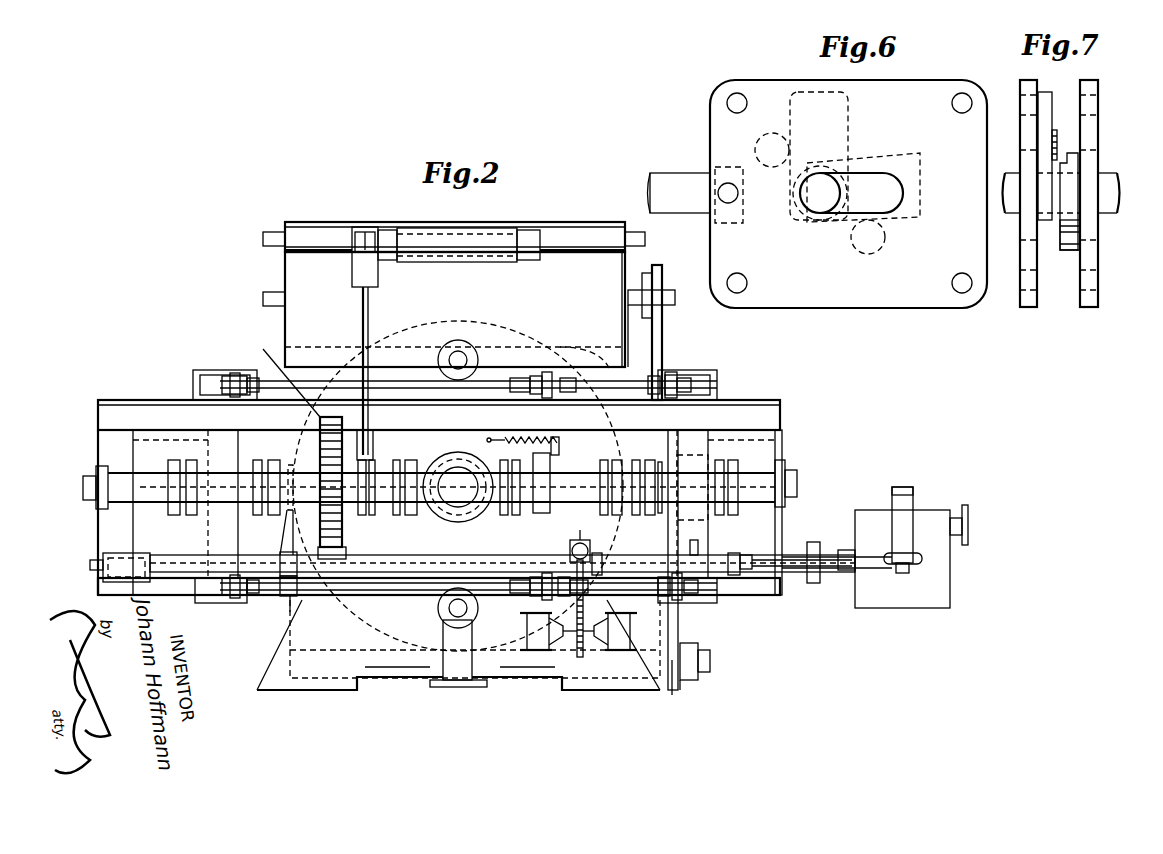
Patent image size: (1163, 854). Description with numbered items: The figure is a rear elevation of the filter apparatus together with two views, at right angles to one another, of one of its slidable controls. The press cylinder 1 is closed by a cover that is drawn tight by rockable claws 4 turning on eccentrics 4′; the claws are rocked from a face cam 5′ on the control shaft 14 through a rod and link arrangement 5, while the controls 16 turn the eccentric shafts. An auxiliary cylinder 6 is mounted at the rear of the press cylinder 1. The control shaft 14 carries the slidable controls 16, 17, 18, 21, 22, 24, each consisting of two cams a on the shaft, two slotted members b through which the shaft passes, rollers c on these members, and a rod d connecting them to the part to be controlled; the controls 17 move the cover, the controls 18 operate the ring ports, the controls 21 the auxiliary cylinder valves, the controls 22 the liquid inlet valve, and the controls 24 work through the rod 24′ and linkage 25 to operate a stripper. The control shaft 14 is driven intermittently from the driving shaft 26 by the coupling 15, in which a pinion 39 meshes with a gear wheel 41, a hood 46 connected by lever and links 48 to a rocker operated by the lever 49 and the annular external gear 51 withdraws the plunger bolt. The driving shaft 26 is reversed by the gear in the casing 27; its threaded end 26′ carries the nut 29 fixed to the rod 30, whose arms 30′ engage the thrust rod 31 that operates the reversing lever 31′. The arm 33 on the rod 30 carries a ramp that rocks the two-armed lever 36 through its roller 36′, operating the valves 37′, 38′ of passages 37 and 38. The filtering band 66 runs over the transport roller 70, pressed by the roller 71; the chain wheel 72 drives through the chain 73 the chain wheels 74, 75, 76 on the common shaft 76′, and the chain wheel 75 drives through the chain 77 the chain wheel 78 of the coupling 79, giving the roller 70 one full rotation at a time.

In FIG. 2, the press cylinder 1 is at (535, 345).
In FIG. 2, the rockable claws 4 is at (193, 375).
In FIG. 2, the eccentrics 4′ is at (210, 370).
In FIG. 2, the rod and link arrangement 5 is at (268, 384).
In FIG. 2, the face cam 5′ is at (547, 470).
In FIG. 2, the auxiliary cylinder 6 is at (436, 462).
In FIG. 2, the control shaft 14 is at (695, 465).
In FIG. 6, the control shaft 14 is at (813, 207).
In FIG. 7, the control shaft 14 is at (1105, 208).
In FIG. 2, the coupling 15 is at (320, 467).
In FIG. 2, the control members 16 is at (172, 466).
In FIG. 2, the controls 17 is at (256, 468).
In FIG. 2, the controls 18 is at (606, 462).
In FIG. 2, the controls 21 is at (506, 516).
In FIG. 2, the controls 22 is at (407, 516).
In FIG. 2, the controls 24 is at (365, 516).
In FIG. 2, the rod 24′ is at (362, 315).
In FIG. 2, the linkage 25 is at (488, 236).
In FIG. 2, the driving shaft 26 is at (787, 552).
In FIG. 2, the other end of driving shaft 26′ is at (100, 575).
In FIG. 2, the reversing gear casing 27 is at (858, 598).
In FIG. 2, the nut 29 is at (142, 556).
In FIG. 2, the rod 30 is at (178, 558).
In FIG. 2, the arms 30′ is at (734, 552).
In FIG. 2, the thrust rod 31 is at (752, 570).
In FIG. 2, the reversing lever 31′ is at (914, 575).
In FIG. 2, the arm 33 is at (283, 562).
In FIG. 2, the two-armed lever 36 is at (571, 545).
In FIG. 2, the roller 36′ is at (588, 529).
In FIG. 2, the passage 37 is at (442, 614).
In FIG. 2, the valve 37′ is at (540, 652).
In FIG. 2, the passage 38 is at (438, 360).
In FIG. 2, the valve 38′ is at (612, 652).
In FIG. 2, the pinion 39 is at (335, 575).
In FIG. 2, the gear wheel 41 is at (287, 378).
In FIG. 2, the hood 46 is at (290, 466).
In FIG. 2, the lever and links 48 is at (287, 518).
In FIG. 2, the lever 49 is at (288, 596).
In FIG. 2, the annular external gear 51 is at (298, 592).
In FIG. 2, the filtering medium band 66 is at (620, 357).
In FIG. 2, the transport roller 70 is at (620, 285).
In FIG. 2, the pressure roller 71 is at (603, 226).
In FIG. 2, the chain wheel 72 is at (694, 542).
In FIG. 2, the chain 73 is at (679, 632).
In FIG. 2, the chain wheel 74 is at (690, 682).
In FIG. 2, the chain wheel 75 is at (672, 684).
In FIG. 2, the chain wheel 76 is at (699, 678).
In FIG. 2, the common shaft 76′ is at (724, 654).
In FIG. 2, the chain 77 is at (660, 333).
In FIG. 2, the chain wheel 78 is at (662, 278).
In FIG. 2, the coupling 79 is at (651, 312).
In FIG. 6, the cams a is at (848, 125).
In FIG. 7, the cams a is at (1047, 90).
In FIG. 6, the slotted members b is at (710, 131).
In FIG. 7, the slotted members b is at (1020, 142).
In FIG. 6, the rollers c is at (758, 141).
In FIG. 7, the rollers c is at (1057, 140).
In FIG. 6, the rod d is at (695, 206).